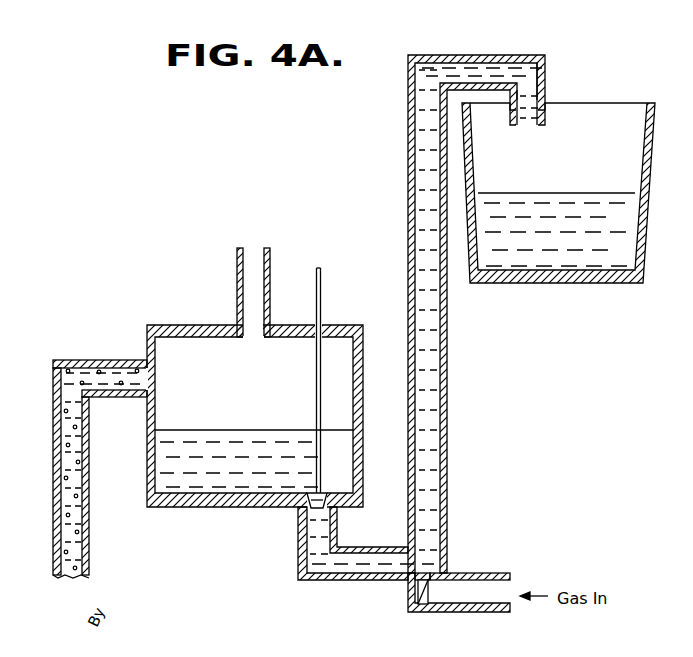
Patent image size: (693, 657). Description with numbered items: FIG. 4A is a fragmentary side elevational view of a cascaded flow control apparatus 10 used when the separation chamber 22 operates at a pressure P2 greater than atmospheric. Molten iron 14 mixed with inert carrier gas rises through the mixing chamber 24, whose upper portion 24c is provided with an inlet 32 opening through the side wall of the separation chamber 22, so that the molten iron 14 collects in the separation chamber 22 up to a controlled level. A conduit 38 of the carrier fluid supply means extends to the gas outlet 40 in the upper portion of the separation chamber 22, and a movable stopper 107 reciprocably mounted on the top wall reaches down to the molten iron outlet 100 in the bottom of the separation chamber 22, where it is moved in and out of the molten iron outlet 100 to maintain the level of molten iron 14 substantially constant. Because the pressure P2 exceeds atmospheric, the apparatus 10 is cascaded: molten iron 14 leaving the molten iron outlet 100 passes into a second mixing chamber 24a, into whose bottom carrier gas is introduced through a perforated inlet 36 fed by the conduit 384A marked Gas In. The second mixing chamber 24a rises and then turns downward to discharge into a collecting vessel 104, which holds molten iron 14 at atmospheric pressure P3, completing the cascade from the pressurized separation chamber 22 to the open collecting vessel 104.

The cascaded flow control apparatus 10 is at (347, 206).
The separation chamber 22 is at (344, 326).
The conduit 38 is at (236, 288).
The gas outlet 40 is at (250, 339).
The stopper 107 is at (314, 408).
The molten iron outlet 100 is at (329, 500).
The conduit 384A is at (478, 583).
The perforated inlet 36 is at (427, 606).
The second mixing chamber 24a is at (448, 430).
The collecting vessel 104 is at (532, 284).
The upper portion of mixing chamber 24c is at (88, 360).
The mixing chamber 24 is at (90, 523).
The inlet 32 is at (157, 378).
The molten iron 14 is at (605, 258).
The pressure in separation chamber P2 is at (227, 386).
The atmospheric pressure P3 is at (568, 158).